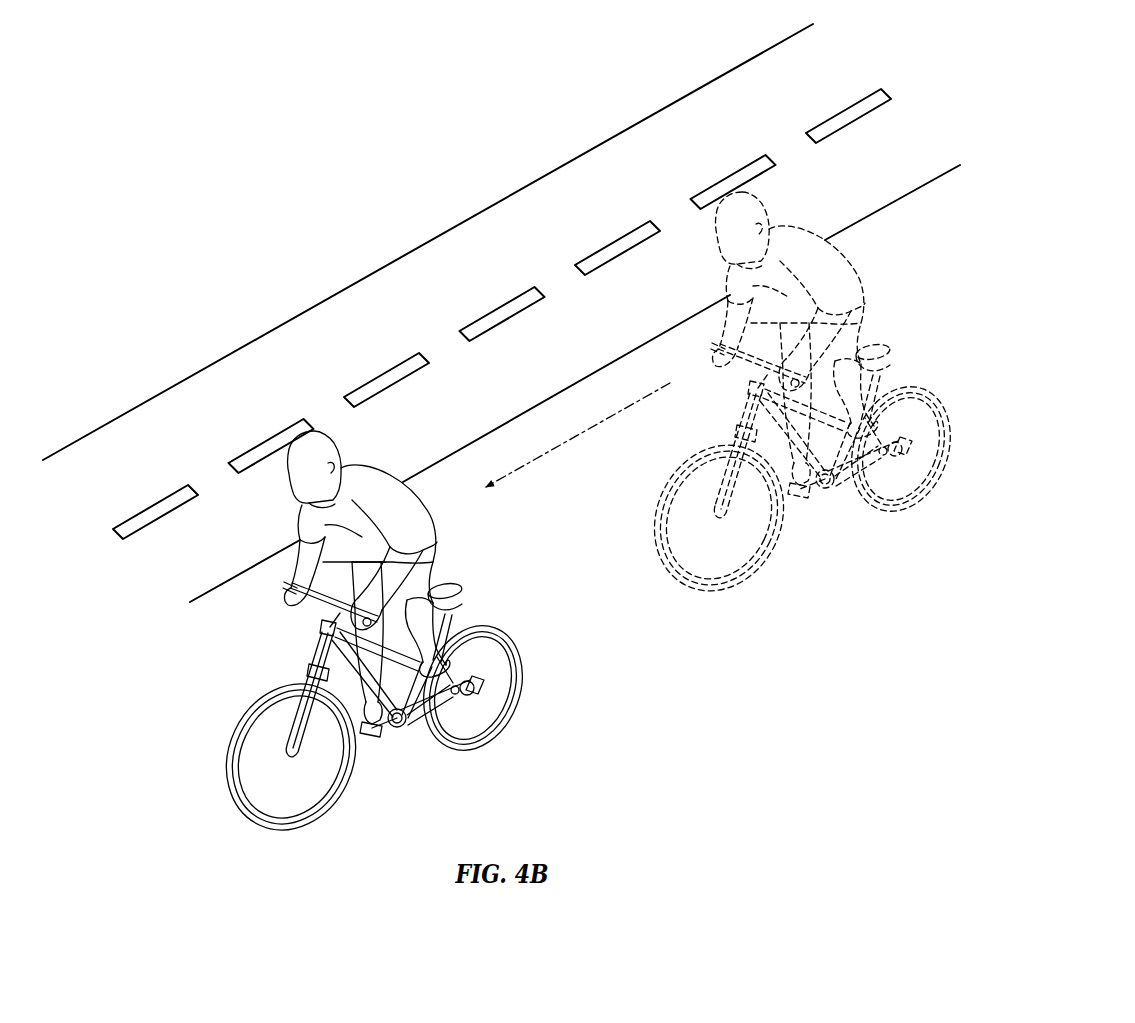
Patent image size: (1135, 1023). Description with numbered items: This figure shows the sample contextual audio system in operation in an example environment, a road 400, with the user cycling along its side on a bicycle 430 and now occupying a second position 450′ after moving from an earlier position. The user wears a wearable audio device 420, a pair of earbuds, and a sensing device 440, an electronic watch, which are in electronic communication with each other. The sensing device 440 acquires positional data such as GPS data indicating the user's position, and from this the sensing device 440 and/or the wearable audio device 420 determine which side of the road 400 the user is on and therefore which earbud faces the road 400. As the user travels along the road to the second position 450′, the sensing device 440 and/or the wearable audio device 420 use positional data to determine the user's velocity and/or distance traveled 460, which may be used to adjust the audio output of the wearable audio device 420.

The road 400 is at (658, 79).
The wearable audio device 420 is at (344, 467).
The bicycle 430 is at (465, 588).
The sensing device 440 is at (367, 588).
The second position 450′ is at (434, 780).
The distance traveled 460 is at (611, 421).